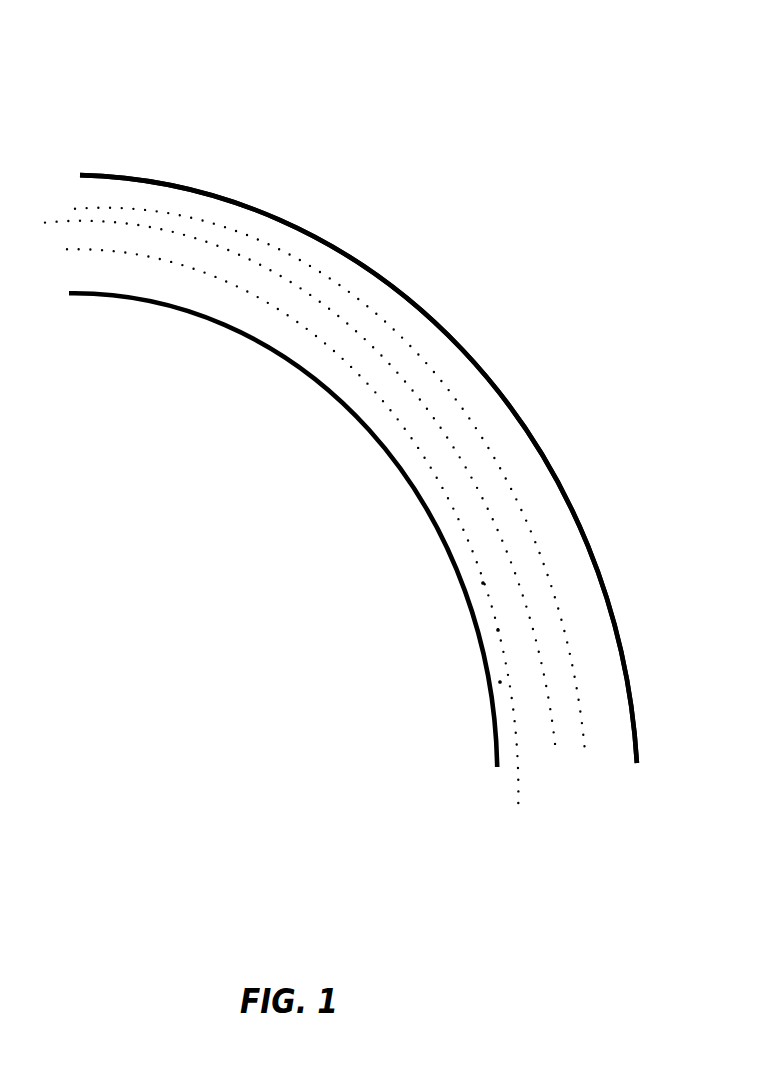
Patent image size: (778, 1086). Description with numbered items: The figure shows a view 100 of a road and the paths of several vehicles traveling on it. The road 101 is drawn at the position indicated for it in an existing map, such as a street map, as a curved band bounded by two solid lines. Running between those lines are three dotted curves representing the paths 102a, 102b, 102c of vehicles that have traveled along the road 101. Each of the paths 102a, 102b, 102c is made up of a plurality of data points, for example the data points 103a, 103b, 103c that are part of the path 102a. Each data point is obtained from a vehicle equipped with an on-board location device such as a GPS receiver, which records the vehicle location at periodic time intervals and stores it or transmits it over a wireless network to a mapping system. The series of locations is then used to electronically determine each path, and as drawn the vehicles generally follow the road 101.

The curved structure 100 is at (400, 390).
The road 101 is at (433, 320).
The path 102a is at (517, 787).
The path 102b is at (557, 763).
The path 102c is at (583, 742).
The data point 103a is at (483, 583).
The data point 103b is at (498, 630).
The data point 103c is at (500, 682).